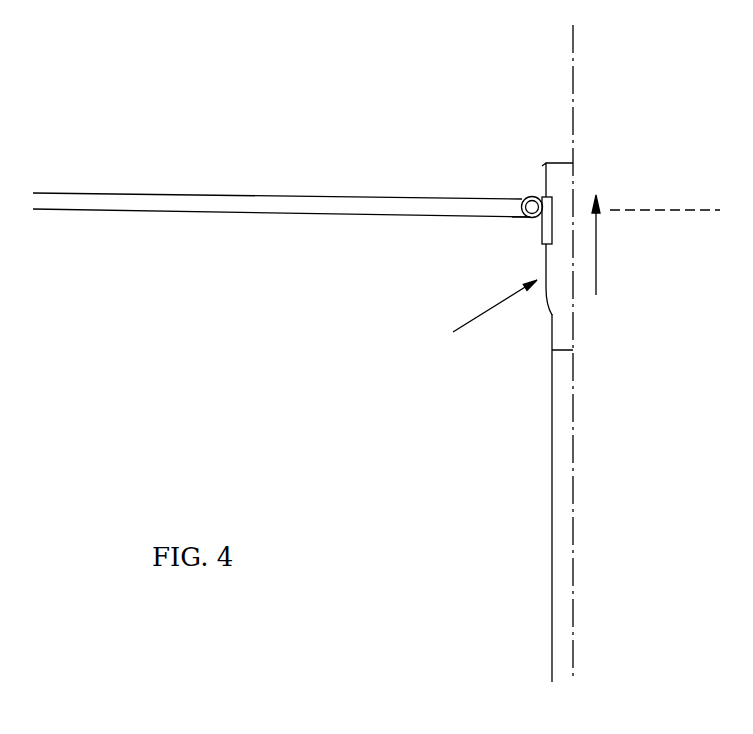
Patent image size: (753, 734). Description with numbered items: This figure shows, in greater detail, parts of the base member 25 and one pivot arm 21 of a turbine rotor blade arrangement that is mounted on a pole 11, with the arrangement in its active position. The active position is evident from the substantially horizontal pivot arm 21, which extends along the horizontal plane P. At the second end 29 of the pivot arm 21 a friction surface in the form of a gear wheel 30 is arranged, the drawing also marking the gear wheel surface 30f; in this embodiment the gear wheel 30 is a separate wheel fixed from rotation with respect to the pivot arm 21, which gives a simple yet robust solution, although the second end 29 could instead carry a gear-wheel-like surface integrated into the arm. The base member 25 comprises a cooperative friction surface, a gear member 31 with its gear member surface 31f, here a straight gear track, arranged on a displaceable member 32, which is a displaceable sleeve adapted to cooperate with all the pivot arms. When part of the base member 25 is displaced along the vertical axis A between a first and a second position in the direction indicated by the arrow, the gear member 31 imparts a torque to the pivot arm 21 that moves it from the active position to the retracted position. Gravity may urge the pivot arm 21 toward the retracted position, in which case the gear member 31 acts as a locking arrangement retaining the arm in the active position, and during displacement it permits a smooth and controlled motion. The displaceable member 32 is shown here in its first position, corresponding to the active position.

The pole 11 is at (552, 441).
The pivot arm 21 is at (237, 216).
The base member 25 is at (478, 314).
The second end of the pivot arm 29 is at (528, 218).
The gear wheel 30 is at (525, 199).
The pivot pin head 30f is at (530, 197).
The gear member 31 is at (542, 237).
The bracket flange 31f is at (542, 226).
The displaceable member 32 is at (550, 335).
The vertical axis A is at (573, 81).
The horizontal plane P is at (663, 211).